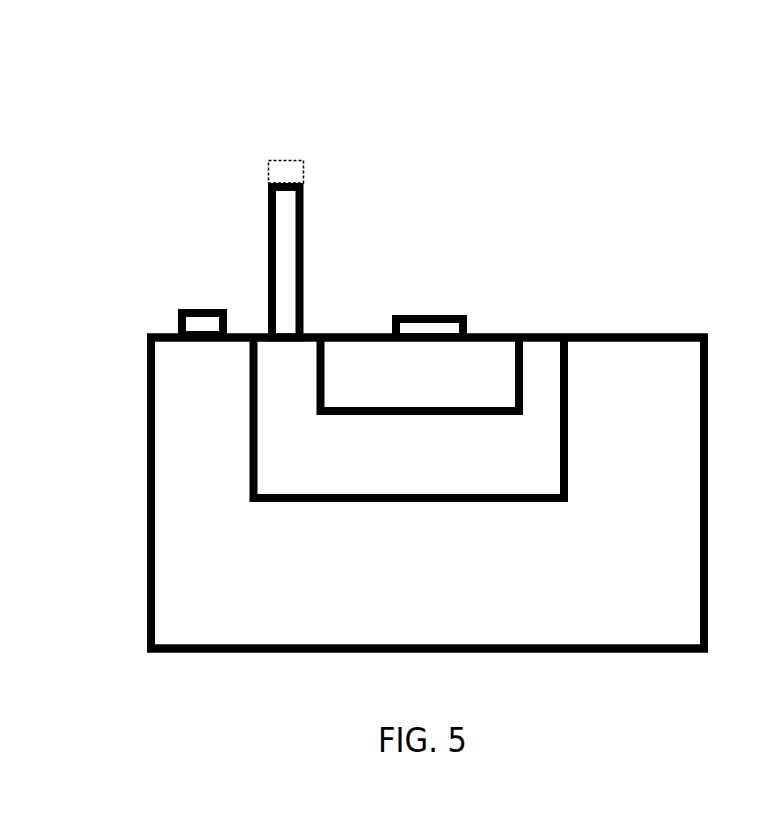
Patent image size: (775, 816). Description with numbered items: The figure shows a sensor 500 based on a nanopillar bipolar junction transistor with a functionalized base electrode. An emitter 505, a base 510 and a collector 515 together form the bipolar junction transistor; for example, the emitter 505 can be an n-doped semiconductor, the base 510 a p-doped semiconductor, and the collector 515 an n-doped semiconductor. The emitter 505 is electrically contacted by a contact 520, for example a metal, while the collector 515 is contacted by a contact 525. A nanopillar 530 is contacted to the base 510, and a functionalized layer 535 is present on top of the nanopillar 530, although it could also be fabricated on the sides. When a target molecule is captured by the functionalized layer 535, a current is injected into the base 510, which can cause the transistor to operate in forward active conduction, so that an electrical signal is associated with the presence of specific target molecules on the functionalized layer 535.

The sensor 500 is at (650, 56).
The emitter 505 is at (476, 355).
The base 510 is at (424, 457).
The collector 515 is at (202, 457).
The contact 520 is at (435, 328).
The contact 525 is at (200, 322).
The nanopillar 530 is at (288, 242).
The functionalized layer 535 is at (288, 172).